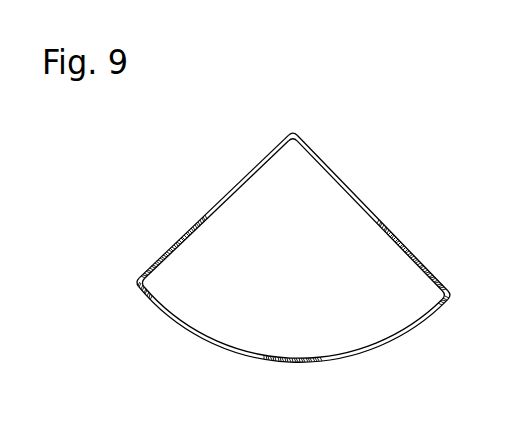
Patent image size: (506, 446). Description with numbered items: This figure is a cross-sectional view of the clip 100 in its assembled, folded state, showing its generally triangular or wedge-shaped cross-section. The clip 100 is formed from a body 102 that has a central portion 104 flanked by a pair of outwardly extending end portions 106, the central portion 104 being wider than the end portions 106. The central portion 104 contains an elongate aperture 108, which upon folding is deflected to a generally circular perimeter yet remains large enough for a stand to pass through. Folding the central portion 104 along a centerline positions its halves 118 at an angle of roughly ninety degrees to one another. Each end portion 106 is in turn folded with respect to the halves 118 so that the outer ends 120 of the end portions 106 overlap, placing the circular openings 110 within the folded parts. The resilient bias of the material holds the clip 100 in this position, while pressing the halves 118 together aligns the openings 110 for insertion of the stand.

The clip 100 is at (300, 87).
The body 102 is at (328, 151).
The central portion 104 is at (252, 164).
The end portions 106 is at (139, 298).
The elongate aperture 108 is at (227, 192).
The opening 110 is at (186, 334).
The halves 118 is at (166, 246).
The outer ends 120 is at (265, 367).